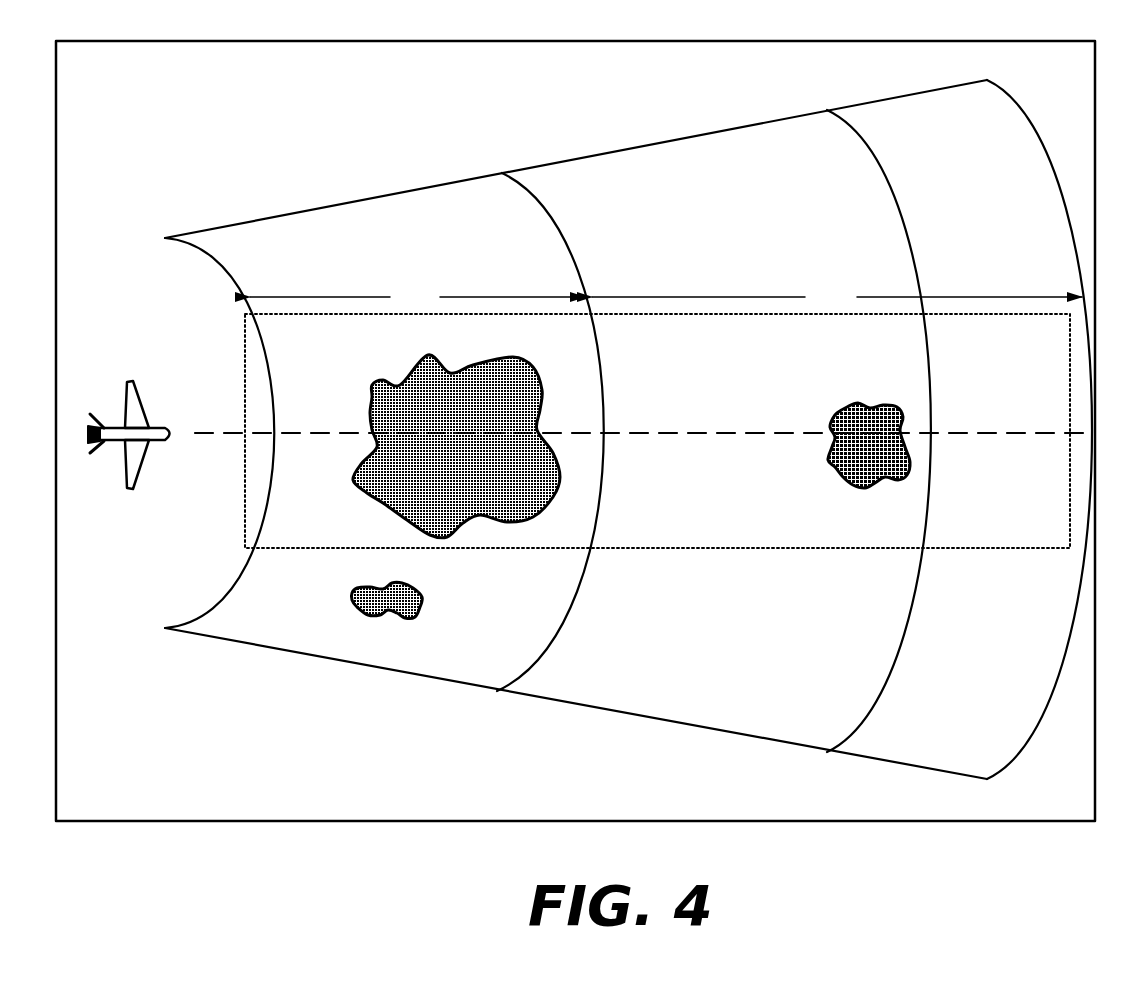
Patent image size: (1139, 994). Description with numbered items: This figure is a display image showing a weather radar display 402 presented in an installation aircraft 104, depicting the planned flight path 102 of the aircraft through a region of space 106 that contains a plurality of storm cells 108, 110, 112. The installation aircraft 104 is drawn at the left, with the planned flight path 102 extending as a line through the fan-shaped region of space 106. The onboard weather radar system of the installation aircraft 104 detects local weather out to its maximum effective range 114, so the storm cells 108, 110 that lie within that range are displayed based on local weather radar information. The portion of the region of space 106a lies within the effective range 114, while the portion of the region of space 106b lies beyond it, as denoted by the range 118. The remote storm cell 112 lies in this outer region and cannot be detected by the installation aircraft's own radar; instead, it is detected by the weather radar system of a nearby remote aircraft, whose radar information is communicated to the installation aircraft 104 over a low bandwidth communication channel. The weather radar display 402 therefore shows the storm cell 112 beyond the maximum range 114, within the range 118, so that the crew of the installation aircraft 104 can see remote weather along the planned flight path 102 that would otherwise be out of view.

The planned flight path 102 is at (290, 437).
The installation aircraft 104 is at (128, 510).
The region of space 106 is at (708, 192).
The region of space 106a is at (458, 278).
The region of space 106b is at (791, 274).
The storm cell 108 is at (372, 385).
The storm cell 110 is at (422, 600).
The storm cell 112 is at (864, 489).
The effective range 114 is at (417, 296).
The range 118 is at (837, 296).
The weather radar display 402 is at (994, 855).